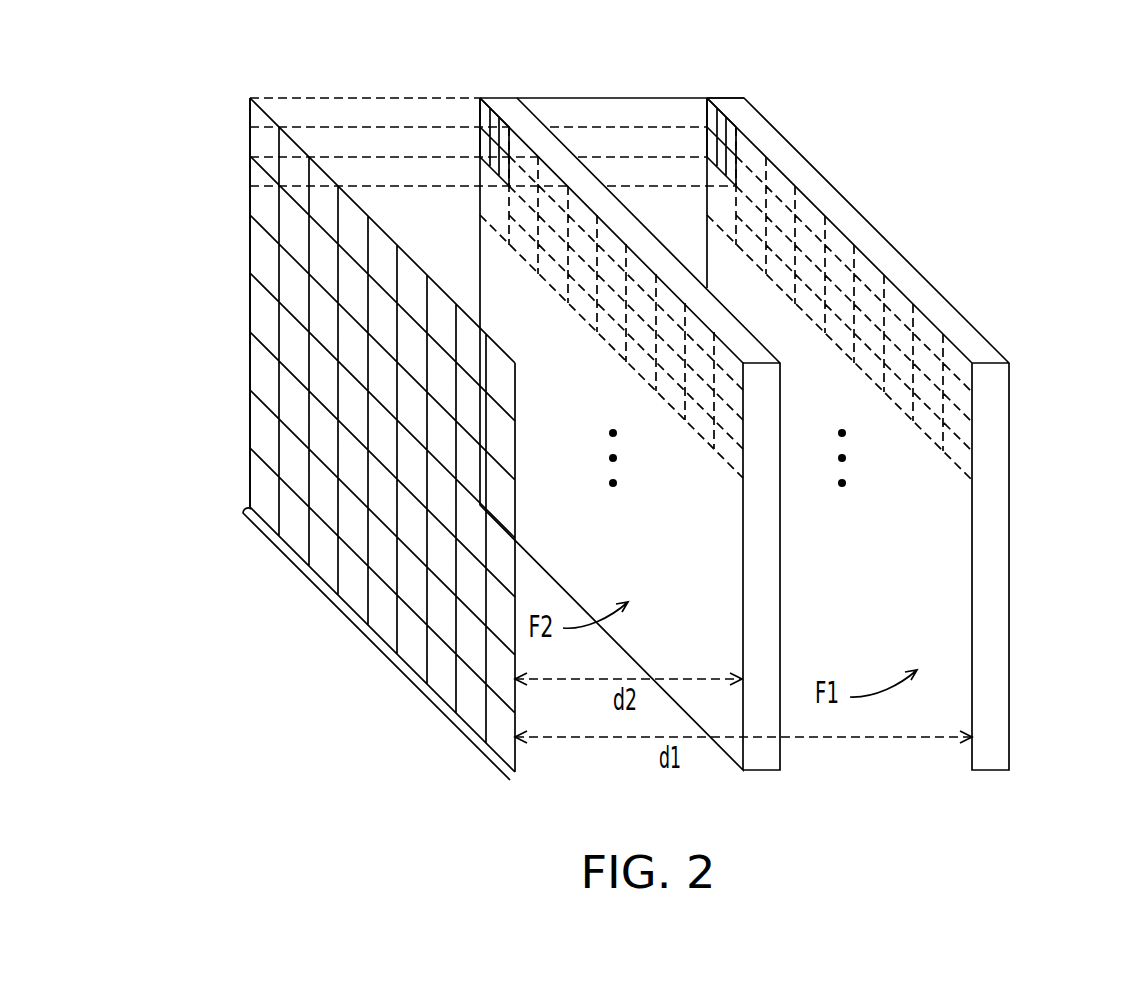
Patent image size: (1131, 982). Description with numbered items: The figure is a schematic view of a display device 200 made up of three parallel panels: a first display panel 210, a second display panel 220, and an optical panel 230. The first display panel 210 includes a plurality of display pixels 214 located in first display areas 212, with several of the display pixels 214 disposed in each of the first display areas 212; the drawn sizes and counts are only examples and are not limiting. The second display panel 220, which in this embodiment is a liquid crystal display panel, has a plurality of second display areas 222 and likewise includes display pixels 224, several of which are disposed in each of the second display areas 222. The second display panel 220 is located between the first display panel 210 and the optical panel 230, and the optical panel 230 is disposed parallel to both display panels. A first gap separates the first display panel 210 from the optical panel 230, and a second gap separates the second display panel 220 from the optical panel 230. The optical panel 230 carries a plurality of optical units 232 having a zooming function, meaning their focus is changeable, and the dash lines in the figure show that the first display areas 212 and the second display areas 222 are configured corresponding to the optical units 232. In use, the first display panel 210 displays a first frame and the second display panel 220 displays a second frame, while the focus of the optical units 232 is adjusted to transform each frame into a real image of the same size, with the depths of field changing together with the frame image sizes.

The display device 200 is at (1123, 842).
The first display panel 210 is at (788, 162).
The first display areas 212 is at (869, 277).
The display pixels 214 is at (718, 126).
The second display panel 220 is at (510, 110).
The second display areas 222 is at (610, 250).
The display pixels 224 is at (489, 128).
The optical panel 230 is at (382, 435).
The optical units 232 is at (262, 137).